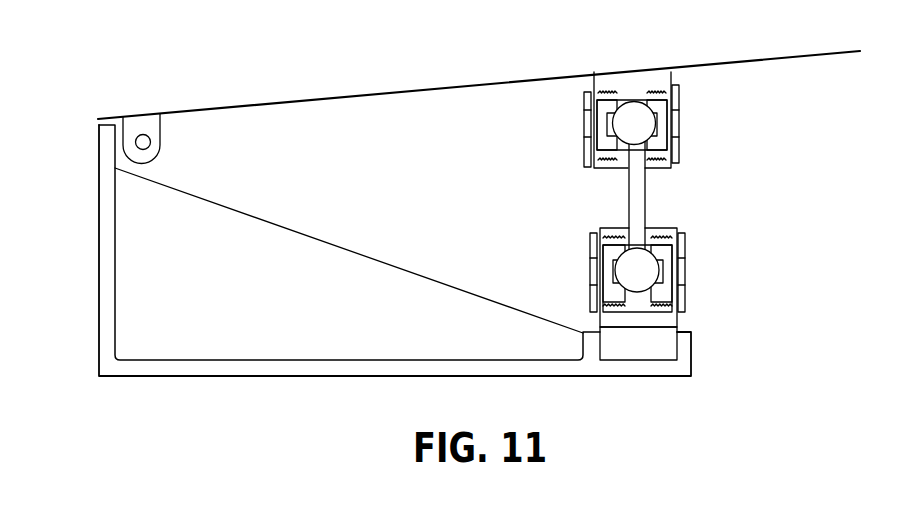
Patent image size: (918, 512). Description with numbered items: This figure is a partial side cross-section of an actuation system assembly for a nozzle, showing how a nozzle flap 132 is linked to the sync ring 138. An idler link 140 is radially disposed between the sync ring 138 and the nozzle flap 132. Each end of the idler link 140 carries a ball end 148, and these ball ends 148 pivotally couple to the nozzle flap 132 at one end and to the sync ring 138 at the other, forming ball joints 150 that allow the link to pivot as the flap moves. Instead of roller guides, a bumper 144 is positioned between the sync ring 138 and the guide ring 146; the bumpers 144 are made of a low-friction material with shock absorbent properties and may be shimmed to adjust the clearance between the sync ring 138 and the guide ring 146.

The nozzle flap 132 is at (381, 92).
The sync ring 138 is at (608, 320).
The idler link 140 is at (636, 205).
The bumper 144 is at (660, 346).
The guide ring 146 is at (651, 368).
The ball end 148 is at (642, 125).
The ball joint 150 is at (681, 165).